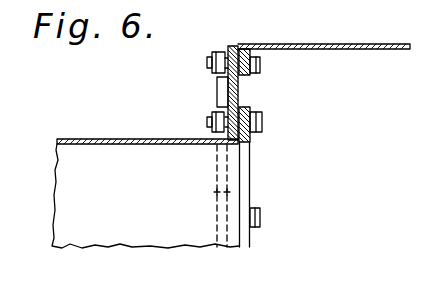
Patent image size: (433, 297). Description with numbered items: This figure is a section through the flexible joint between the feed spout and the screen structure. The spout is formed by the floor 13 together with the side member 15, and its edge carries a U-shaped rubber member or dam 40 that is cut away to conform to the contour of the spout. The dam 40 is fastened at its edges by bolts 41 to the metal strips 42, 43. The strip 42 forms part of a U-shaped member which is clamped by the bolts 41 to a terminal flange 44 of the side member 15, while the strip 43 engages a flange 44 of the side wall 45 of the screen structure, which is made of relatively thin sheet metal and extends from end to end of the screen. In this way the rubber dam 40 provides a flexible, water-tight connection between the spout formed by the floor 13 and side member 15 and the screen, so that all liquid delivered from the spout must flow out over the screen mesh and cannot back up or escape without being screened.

The floor 13 is at (60, 162).
The side member 15 is at (105, 139).
The U-shaped rubber member or dam 40 is at (216, 89).
The bolts 41 is at (211, 57).
The metal strip 42 is at (245, 178).
The metal strip 43 is at (251, 75).
The terminal flange 44 is at (239, 82).
The side wall 45 is at (375, 49).